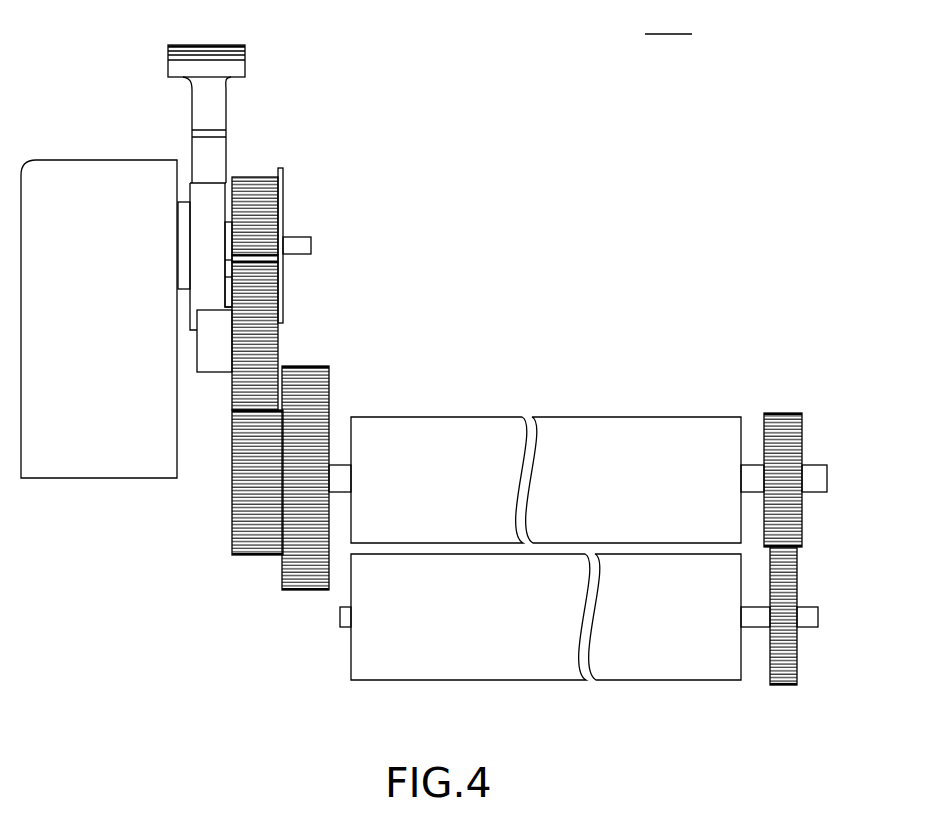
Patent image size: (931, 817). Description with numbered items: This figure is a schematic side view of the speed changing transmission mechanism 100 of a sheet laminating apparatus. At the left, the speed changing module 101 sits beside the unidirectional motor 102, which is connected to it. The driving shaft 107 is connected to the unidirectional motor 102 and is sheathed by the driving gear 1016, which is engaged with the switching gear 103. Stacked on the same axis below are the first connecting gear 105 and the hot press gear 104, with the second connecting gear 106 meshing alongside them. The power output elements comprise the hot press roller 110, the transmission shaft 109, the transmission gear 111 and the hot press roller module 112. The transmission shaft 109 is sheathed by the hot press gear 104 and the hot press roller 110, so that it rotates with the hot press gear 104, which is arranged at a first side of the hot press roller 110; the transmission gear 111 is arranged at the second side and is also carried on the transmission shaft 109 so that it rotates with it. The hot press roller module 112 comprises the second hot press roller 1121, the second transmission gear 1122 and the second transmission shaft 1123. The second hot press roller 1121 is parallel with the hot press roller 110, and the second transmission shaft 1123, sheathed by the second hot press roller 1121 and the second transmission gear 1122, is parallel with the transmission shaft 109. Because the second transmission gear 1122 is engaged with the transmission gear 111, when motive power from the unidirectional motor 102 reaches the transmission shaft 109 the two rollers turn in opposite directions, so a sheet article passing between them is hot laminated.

The speed changing transmission mechanism 100 is at (668, 21).
The speed changing module 101 is at (207, 60).
The unidirectional motor 102 is at (117, 173).
The driving gear 1016 is at (253, 183).
The switching gear 103 is at (253, 260).
The hot press gear 104 is at (284, 544).
The first connecting gear 105 is at (267, 352).
The second connecting gear 106 is at (322, 363).
The driving shaft 107 is at (302, 245).
The transmission shaft 109 is at (338, 467).
The hot press roller 110 is at (618, 426).
The transmission gear 111 is at (780, 423).
The hot press roller module 112 is at (436, 664).
The second hot press roller 1121 is at (663, 668).
The second transmission gear 1122 is at (778, 675).
The second transmission shaft 1123 is at (808, 617).